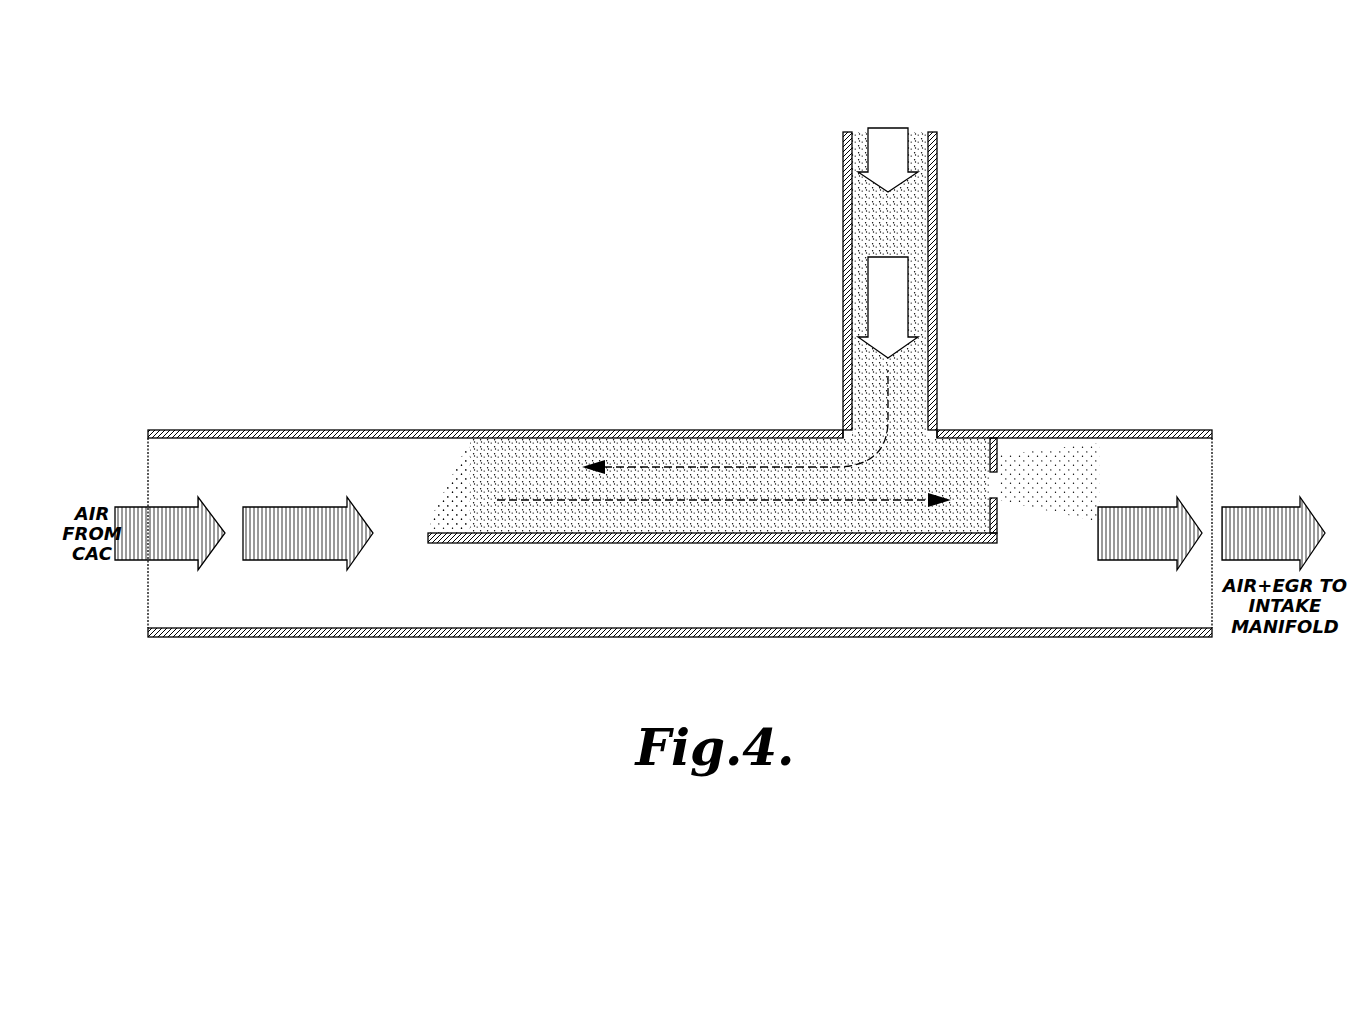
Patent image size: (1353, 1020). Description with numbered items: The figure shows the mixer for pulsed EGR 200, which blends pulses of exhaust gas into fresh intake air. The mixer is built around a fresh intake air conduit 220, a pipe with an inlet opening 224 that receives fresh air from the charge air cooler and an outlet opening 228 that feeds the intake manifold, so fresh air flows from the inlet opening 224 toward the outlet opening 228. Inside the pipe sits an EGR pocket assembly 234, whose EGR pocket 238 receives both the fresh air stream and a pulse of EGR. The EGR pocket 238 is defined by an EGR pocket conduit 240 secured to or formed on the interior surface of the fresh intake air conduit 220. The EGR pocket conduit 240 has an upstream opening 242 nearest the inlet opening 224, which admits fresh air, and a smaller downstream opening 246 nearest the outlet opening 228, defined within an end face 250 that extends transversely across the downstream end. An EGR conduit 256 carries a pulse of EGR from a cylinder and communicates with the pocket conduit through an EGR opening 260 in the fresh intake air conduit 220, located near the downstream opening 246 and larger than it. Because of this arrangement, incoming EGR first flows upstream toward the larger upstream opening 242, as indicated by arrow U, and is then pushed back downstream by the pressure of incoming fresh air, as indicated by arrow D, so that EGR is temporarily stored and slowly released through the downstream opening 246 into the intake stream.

The mixer for pulsed EGR 200 is at (1122, 254).
The fresh intake air conduit 220 is at (310, 430).
The inlet opening 224 is at (147, 440).
The outlet opening 228 is at (1213, 460).
The EGR pocket assembly 234 is at (757, 420).
The EGR pocket 238 is at (537, 460).
The EGR pocket conduit 240 is at (705, 543).
The upstream opening 242 is at (424, 475).
The downstream opening 246 is at (998, 472).
The end face 250 is at (999, 452).
The EGR conduit 256 is at (937, 237).
The EGR opening 260 is at (866, 432).